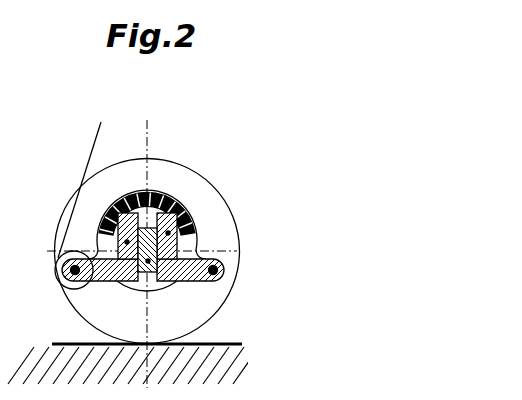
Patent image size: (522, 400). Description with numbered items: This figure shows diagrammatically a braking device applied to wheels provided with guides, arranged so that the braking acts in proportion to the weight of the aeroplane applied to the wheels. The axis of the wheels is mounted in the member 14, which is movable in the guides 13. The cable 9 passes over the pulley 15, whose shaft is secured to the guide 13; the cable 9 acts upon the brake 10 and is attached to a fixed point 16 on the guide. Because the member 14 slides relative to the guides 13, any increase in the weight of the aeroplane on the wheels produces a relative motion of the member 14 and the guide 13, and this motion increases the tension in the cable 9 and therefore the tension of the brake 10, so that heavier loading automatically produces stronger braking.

The cable 9 is at (90, 159).
The brake 10 is at (147, 193).
The guides 13 is at (168, 233).
The member 14 is at (148, 261).
The pulley 15 is at (66, 288).
The fixed point 16 is at (215, 281).